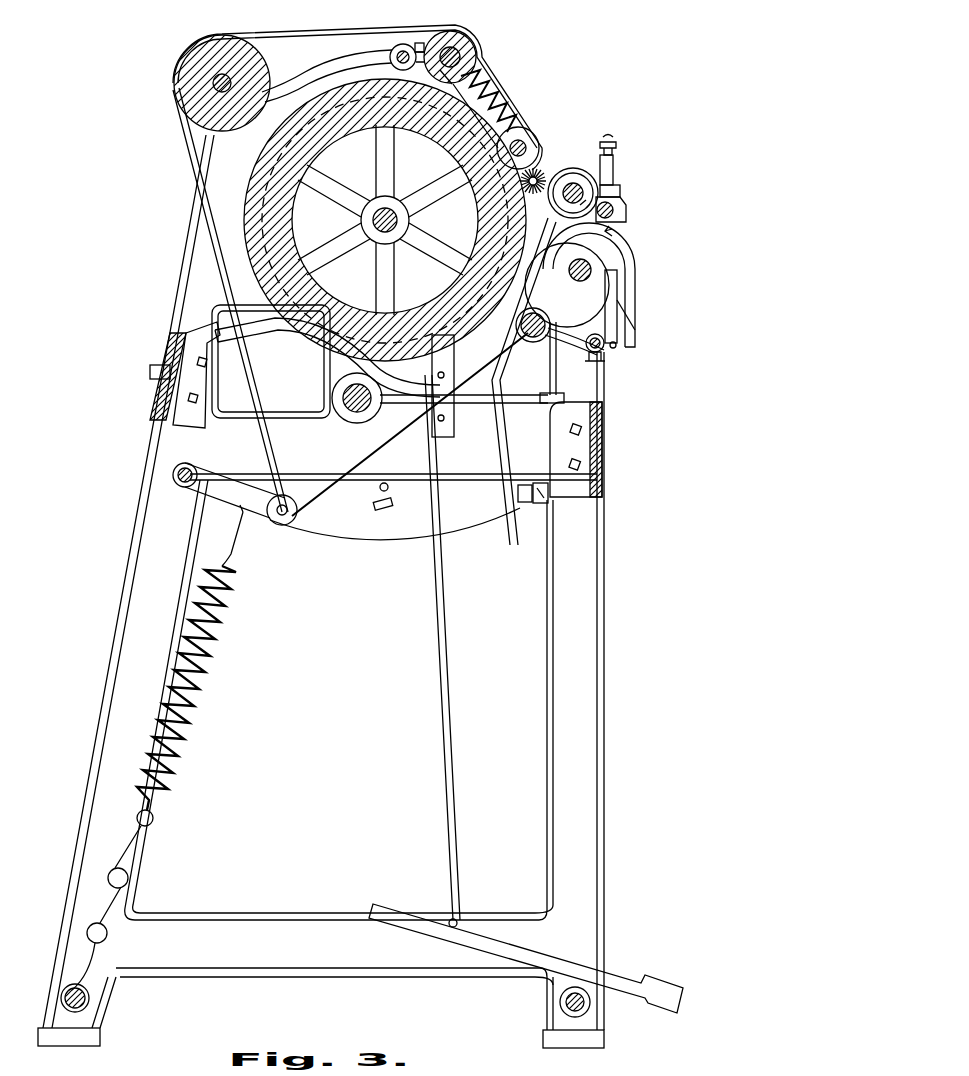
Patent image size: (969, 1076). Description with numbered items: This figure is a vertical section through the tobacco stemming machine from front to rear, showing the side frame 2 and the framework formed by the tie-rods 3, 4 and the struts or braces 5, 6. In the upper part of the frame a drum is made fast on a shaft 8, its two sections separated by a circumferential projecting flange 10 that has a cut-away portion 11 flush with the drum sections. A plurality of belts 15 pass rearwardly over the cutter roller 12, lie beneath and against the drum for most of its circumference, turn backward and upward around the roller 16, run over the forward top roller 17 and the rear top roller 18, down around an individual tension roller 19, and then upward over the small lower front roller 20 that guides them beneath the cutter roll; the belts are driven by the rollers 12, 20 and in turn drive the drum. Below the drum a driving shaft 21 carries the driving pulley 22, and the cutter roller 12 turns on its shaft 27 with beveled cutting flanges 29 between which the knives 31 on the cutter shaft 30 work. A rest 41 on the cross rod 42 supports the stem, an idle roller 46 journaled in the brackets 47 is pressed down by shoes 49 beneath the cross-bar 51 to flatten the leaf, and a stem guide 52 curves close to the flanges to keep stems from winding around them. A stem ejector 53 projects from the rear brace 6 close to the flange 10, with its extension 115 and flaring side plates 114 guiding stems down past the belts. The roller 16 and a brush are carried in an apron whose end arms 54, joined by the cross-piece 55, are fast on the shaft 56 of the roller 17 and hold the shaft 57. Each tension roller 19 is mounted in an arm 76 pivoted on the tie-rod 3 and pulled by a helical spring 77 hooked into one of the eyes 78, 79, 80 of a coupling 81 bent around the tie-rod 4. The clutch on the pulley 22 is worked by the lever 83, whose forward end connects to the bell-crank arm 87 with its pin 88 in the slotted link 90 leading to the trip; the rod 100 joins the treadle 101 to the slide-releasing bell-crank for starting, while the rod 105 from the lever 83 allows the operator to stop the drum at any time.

The side frame 2 is at (605, 755).
The tie-rod 3 is at (390, 54).
The tie-rod 4 is at (62, 994).
The strut or brace 5 is at (605, 470).
The strut or brace 6 is at (160, 390).
The shaft 8 is at (380, 232).
The circumferential projecting flange 10 is at (270, 175).
The cut-away portion 11 is at (426, 95).
The cutter roller 12 is at (597, 272).
The belts 15 is at (188, 160).
The roller 16 is at (524, 148).
The forward top roller 17 is at (465, 40).
The rear top roller 18 is at (173, 72).
The tension roller 19 is at (284, 526).
The lower front roller 20 is at (600, 368).
The driving shaft 21 is at (345, 408).
The driving pulley 22 is at (360, 542).
The shaft 27 is at (579, 282).
The disks or cutting flanges 29 is at (632, 255).
The shaft 30 is at (580, 190).
The knives 31 is at (578, 168).
The rest 41 is at (612, 296).
The cross rod 42 is at (620, 352).
The idle roller 46 is at (615, 210).
The brackets 47 is at (628, 193).
The shoes 49 is at (622, 192).
The cross-bar 51 is at (618, 185).
The stem guide 52 is at (540, 262).
The stem ejector 53 is at (292, 350).
The end arms 54 is at (478, 80).
The cross-piece 55 is at (497, 100).
The shaft 56 is at (440, 38).
The shaft 57 is at (522, 150).
The arm 76 is at (225, 490).
The helical spring 77 is at (203, 668).
The eye 78 is at (88, 930).
The eye 79 is at (128, 878).
The eye 80 is at (153, 821).
The coupling 81 is at (110, 898).
The lever 83 is at (408, 428).
The arm 87 is at (546, 502).
The pin 88 is at (518, 495).
The link 90 is at (518, 530).
The rod 100 is at (446, 762).
The treadle 101 is at (665, 995).
The rod 105 is at (548, 380).
The side plates or guides 114 is at (455, 425).
The extension 115 is at (442, 490).